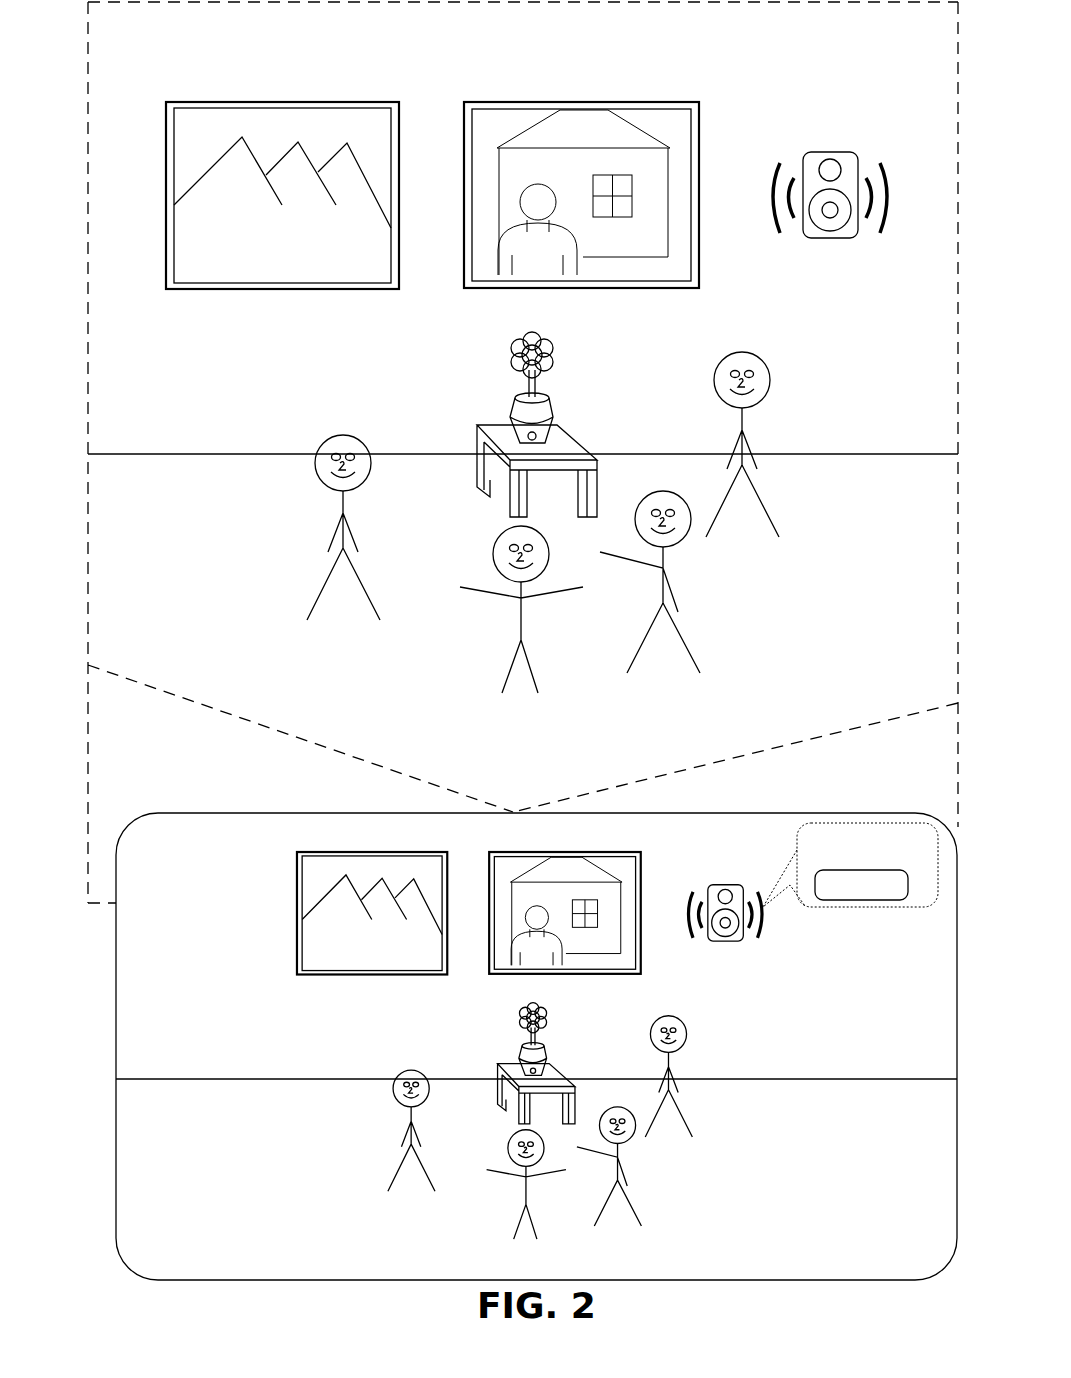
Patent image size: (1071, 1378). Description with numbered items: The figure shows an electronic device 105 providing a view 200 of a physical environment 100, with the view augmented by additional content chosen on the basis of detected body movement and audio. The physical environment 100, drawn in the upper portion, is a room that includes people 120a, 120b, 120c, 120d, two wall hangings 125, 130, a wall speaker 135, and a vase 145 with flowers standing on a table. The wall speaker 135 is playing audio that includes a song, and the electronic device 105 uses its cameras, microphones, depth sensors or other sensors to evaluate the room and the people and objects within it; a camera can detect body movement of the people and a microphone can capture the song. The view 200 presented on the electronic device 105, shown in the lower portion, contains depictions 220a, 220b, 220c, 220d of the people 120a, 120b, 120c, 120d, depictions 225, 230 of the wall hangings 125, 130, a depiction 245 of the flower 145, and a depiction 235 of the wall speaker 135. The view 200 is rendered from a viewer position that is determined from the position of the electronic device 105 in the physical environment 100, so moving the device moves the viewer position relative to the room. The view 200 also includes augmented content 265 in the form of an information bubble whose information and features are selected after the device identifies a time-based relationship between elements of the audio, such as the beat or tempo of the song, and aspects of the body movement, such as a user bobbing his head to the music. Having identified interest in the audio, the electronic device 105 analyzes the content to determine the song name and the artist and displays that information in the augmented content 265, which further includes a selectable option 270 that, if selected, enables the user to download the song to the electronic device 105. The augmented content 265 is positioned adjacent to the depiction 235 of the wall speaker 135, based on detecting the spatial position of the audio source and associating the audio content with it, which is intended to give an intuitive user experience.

The physical environment 100 is at (172, 521).
The electronic device 105 is at (116, 1007).
The person 120a is at (358, 578).
The person 120b is at (532, 670).
The person 120c is at (757, 495).
The person 120d is at (680, 635).
The wall hanging 125 is at (180, 100).
The wall hanging 130 is at (480, 102).
The wall speaker 135 is at (822, 240).
The vase with flowers 145 is at (557, 353).
The view 200 is at (210, 863).
The depiction of person 220a is at (418, 1155).
The depiction of person 220b is at (525, 1193).
The depiction of person 220c is at (682, 1105).
The depiction of person 220d is at (628, 1193).
The depiction of wall hanging 225 is at (297, 868).
The depiction of wall hanging 230 is at (488, 966).
The depiction of wall speaker 235 is at (722, 942).
The depiction of flower 245 is at (547, 1015).
The augmented content 265 is at (803, 912).
The selectable option 270 is at (855, 908).